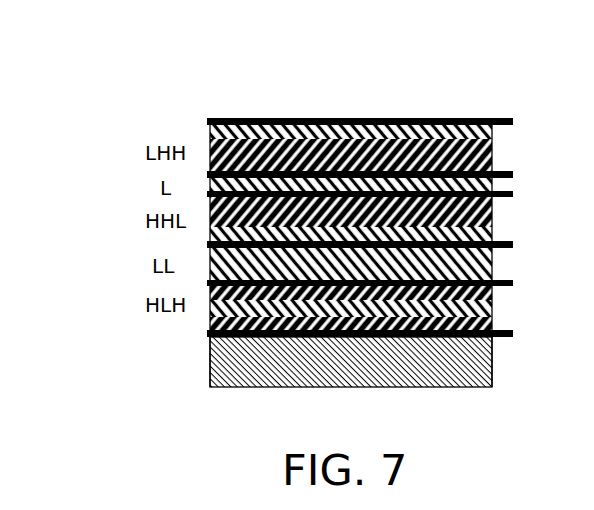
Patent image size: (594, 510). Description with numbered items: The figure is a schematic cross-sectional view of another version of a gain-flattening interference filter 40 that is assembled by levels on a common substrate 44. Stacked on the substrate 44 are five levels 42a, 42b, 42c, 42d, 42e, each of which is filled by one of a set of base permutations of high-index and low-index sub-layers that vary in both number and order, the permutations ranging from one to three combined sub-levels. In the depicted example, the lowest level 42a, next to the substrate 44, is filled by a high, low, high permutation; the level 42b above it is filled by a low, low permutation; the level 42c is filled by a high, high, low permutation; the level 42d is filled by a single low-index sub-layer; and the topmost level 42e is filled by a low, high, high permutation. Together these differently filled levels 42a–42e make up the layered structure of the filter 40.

The gain-flattening filter 40 is at (250, 110).
The level 42e is at (396, 148).
The level 42d is at (396, 183).
The level 42c is at (396, 218).
The level 42b is at (396, 263).
The level 42a is at (396, 309).
The common substrate 44 is at (472, 362).